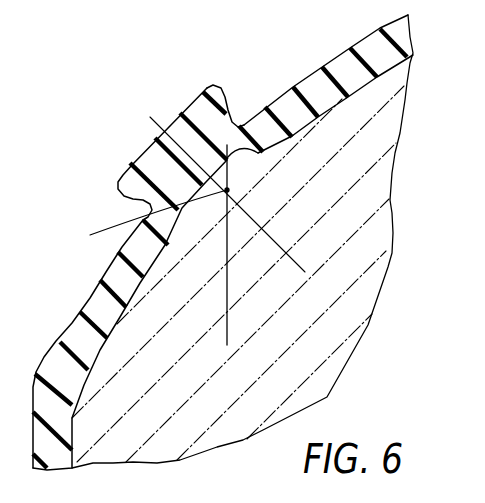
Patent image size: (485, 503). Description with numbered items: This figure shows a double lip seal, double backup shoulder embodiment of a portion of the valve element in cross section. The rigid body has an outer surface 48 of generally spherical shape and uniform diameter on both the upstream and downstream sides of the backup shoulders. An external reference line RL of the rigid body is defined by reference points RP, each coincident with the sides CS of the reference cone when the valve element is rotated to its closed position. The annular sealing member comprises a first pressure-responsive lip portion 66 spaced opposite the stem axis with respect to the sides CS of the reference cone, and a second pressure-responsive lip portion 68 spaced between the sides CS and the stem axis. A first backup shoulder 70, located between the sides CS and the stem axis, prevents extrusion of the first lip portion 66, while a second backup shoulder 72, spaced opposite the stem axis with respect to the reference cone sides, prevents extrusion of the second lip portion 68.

The outer surface of the rigid body 48 is at (121, 317).
The first pressure-responsive lip portion 66 is at (126, 178).
The second pressure-responsive lip portion 68 is at (204, 86).
The first backup shoulder 70 is at (240, 152).
The second backup shoulder 72 is at (141, 219).
The reference points RP is at (228, 190).
The sides of the reference cone CS is at (303, 271).
The external reference line RL is at (227, 318).